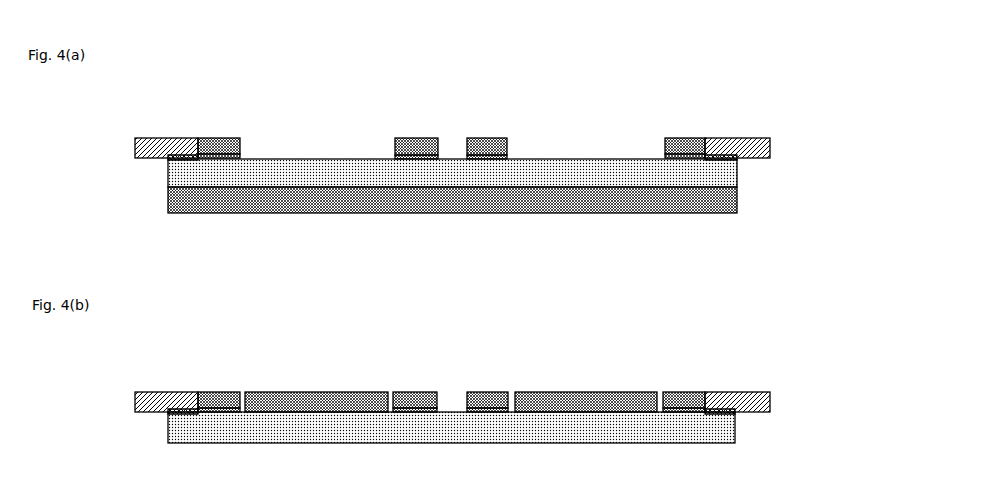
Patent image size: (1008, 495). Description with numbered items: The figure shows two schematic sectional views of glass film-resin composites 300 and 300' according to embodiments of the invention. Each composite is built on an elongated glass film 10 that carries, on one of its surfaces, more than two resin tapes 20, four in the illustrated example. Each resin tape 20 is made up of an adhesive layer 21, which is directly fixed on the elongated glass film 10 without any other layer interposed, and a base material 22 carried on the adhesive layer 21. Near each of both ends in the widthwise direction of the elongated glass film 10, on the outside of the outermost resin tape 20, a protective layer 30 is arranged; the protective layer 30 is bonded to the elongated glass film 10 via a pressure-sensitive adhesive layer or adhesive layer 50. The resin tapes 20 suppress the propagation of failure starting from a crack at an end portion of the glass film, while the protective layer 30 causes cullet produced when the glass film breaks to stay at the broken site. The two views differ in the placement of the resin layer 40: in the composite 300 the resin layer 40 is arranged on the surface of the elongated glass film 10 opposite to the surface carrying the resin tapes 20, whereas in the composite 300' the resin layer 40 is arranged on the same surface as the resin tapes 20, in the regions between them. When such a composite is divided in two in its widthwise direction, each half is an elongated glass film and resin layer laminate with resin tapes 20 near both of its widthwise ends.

In FIG. 4A, the elongated glass film 10 is at (737, 175).
In FIG. 4B, the elongated glass film 10 is at (735, 430).
In FIG. 4A, the resin tape 20 is at (466, 109).
In FIG. 4B, the resin tape 20 is at (459, 356).
In FIG. 4A, the adhesive layer 21 is at (238, 142).
In FIG. 4B, the adhesive layer 21 is at (233, 394).
In FIG. 4A, the base material 22 is at (222, 138).
In FIG. 4B, the base material 22 is at (210, 392).
In FIG. 4A, the protective layer 30 is at (150, 137).
In FIG. 4B, the protective layer 30 is at (150, 392).
In FIG. 4A, the resin layer 40 is at (737, 212).
In FIG. 4B, the resin layer 40 is at (265, 392).
In FIG. 4A, the pressure-sensitive adhesive layer or adhesive layer 50 is at (170, 158).
In FIG. 4B, the pressure-sensitive adhesive layer or adhesive layer 50 is at (170, 412).
In FIG. 4A, the glass film-resin composite 300 is at (868, 67).
In FIG. 4B, the glass film-resin composite 300' is at (871, 317).